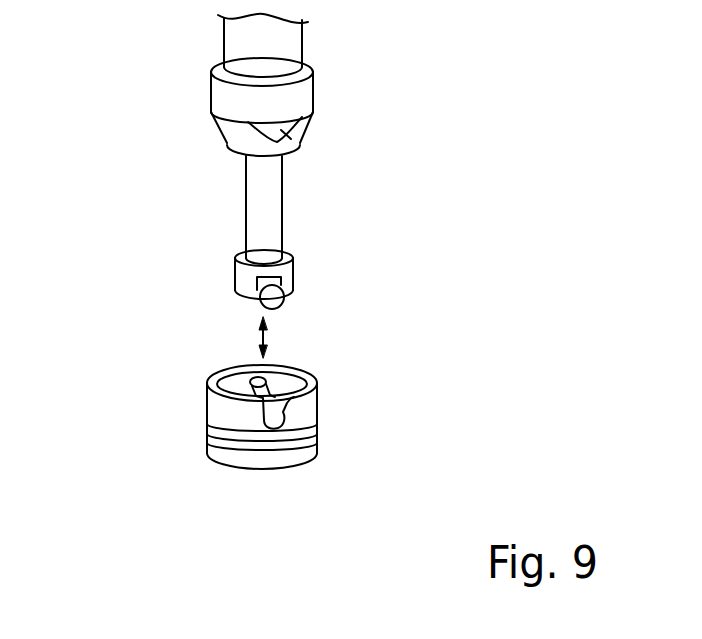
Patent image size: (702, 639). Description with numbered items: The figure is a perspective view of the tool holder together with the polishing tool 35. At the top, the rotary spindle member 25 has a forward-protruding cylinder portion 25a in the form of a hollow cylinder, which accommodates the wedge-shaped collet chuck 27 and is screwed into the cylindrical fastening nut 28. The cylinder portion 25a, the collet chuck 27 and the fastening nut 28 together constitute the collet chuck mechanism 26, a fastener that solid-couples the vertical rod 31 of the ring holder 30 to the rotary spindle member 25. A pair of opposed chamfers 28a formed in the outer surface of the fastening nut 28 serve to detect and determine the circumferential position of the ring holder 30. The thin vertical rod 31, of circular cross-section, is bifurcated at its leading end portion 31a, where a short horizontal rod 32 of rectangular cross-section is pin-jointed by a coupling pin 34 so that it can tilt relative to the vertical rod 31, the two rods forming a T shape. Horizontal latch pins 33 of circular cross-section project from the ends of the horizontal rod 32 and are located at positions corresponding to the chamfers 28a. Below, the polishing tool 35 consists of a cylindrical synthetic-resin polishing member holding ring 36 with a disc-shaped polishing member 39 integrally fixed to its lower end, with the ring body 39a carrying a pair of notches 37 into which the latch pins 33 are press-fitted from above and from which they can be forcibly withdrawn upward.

The forward-protruding cylinder portion 25a is at (179, 46).
The rotary spindle member 25 is at (232, 42).
The collet chuck mechanism 26 is at (205, 115).
The wedge-shaped collet chuck 27 is at (338, 107).
The fastening nut 28 is at (315, 90).
The chamfers 28a is at (300, 137).
The ring holder 30 is at (460, 197).
The vertical rod 31 is at (283, 213).
The leading end portion of the vertical rod 31a is at (293, 270).
The horizontal rod 32 is at (361, 304).
The horizontal latch pins 33 is at (285, 305).
The coupling pin 34 is at (236, 283).
The polishing tool 35 is at (123, 357).
The polishing member holding ring 36 is at (207, 400).
The notches 37 is at (258, 378).
The disc-shaped polishing member 39 is at (207, 453).
The grooves 39a is at (207, 427).